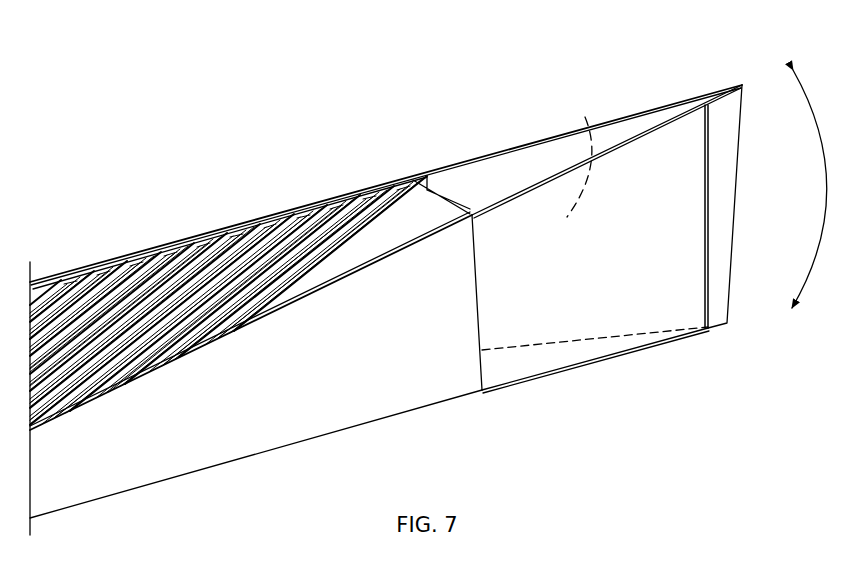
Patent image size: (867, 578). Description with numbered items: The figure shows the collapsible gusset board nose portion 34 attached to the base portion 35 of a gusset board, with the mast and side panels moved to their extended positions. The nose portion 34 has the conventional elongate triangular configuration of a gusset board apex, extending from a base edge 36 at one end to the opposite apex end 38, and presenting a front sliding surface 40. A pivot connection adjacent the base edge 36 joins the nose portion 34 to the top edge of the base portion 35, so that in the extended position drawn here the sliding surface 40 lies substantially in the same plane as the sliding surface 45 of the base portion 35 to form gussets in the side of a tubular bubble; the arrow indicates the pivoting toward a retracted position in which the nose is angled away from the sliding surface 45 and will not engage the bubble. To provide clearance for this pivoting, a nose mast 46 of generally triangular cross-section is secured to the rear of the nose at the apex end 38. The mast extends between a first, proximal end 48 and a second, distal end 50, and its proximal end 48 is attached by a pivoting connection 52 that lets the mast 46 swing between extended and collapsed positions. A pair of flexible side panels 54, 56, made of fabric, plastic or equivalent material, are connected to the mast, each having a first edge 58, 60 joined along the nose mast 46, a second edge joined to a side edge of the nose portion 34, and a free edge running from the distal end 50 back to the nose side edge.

The collapsible gusset board nose portion 34 is at (517, 141).
The base portion 35 is at (414, 414).
The base edge 36 is at (425, 182).
The apex end 38 is at (742, 84).
The front sliding surface 40 is at (483, 171).
The sliding surface 45 is at (230, 234).
The nose mast 46 is at (720, 173).
The first, proximal end 48 is at (743, 86).
The second, distal end 50 is at (721, 327).
The pivoting connection 52 is at (699, 113).
The flexible side panel 54 is at (567, 310).
The flexible side panel 56 is at (586, 121).
The first edge 58 is at (733, 215).
The first edge 60 is at (732, 250).